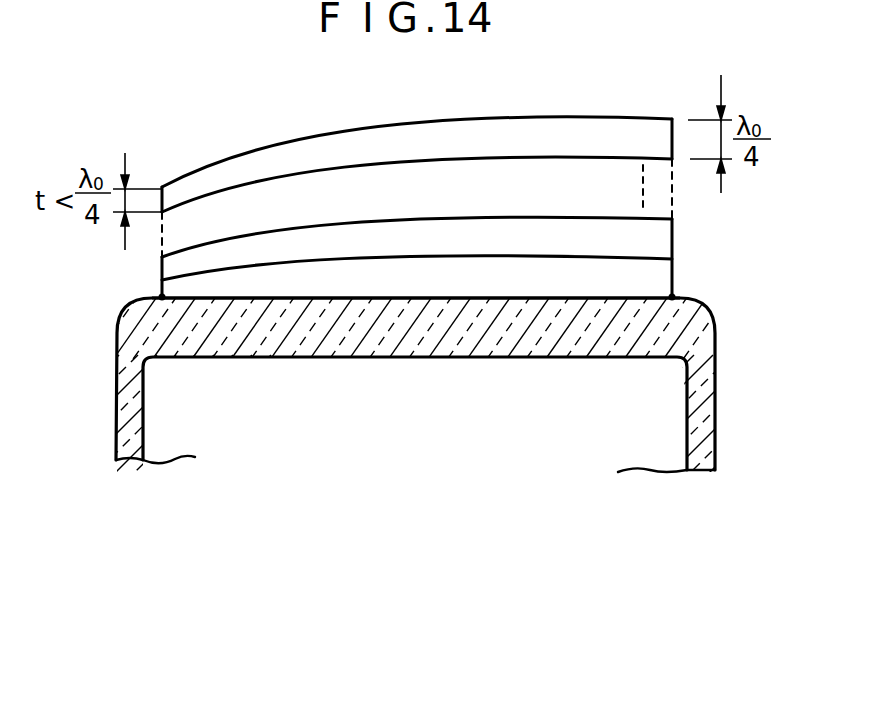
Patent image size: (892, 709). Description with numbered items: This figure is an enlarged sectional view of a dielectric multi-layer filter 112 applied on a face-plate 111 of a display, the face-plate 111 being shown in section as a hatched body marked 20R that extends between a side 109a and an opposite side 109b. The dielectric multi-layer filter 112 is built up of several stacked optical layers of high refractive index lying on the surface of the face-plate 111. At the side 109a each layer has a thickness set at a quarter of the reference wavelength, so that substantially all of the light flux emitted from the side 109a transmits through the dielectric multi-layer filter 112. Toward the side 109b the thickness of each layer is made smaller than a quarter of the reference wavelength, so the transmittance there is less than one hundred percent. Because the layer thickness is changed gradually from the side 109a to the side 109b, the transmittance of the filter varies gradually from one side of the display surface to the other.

The substrate (rear side of lens/optical element) 20R is at (716, 417).
The face-plate 111 is at (516, 300).
The dielectric multi-layer filter 112 is at (681, 119).
The side 109a is at (684, 313).
The side 109b is at (162, 297).